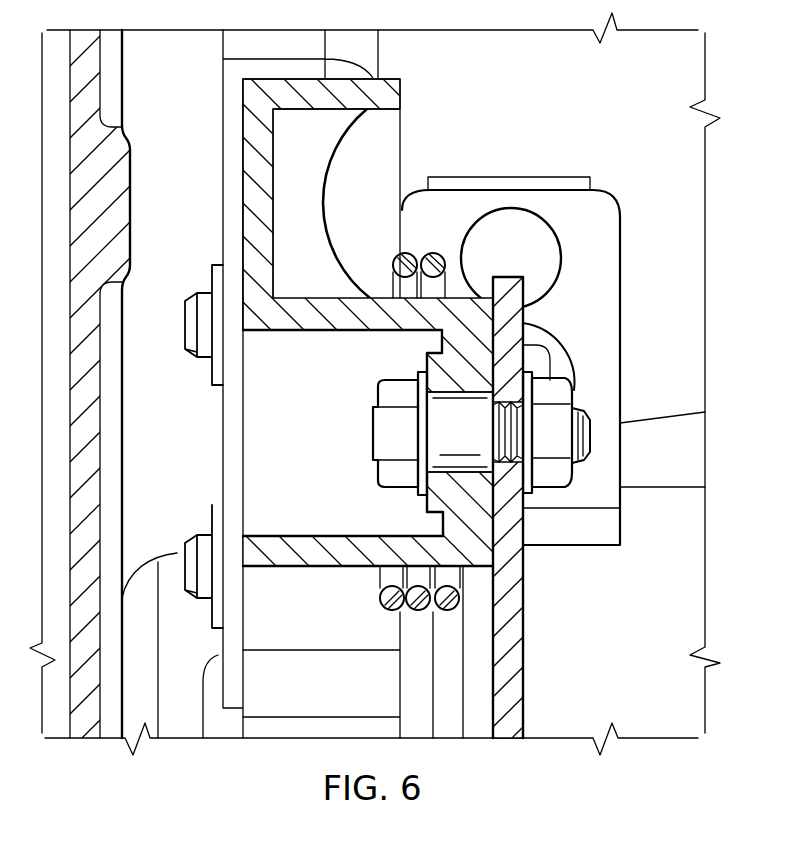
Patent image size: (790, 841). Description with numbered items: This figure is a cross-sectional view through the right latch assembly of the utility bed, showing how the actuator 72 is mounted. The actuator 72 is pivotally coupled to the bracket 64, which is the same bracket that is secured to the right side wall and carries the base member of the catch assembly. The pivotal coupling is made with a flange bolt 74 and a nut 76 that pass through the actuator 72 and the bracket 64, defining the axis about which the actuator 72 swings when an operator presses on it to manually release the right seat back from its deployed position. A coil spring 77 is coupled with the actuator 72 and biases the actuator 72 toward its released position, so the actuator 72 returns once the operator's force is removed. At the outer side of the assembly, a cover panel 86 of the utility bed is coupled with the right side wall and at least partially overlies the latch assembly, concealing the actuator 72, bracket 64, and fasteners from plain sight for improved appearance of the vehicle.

The bracket 64 is at (500, 276).
The actuator 72 is at (425, 363).
The flange bolt 74 is at (373, 436).
The nut 76 is at (558, 378).
The coil spring 77 is at (398, 254).
The cover panel 86 is at (131, 168).